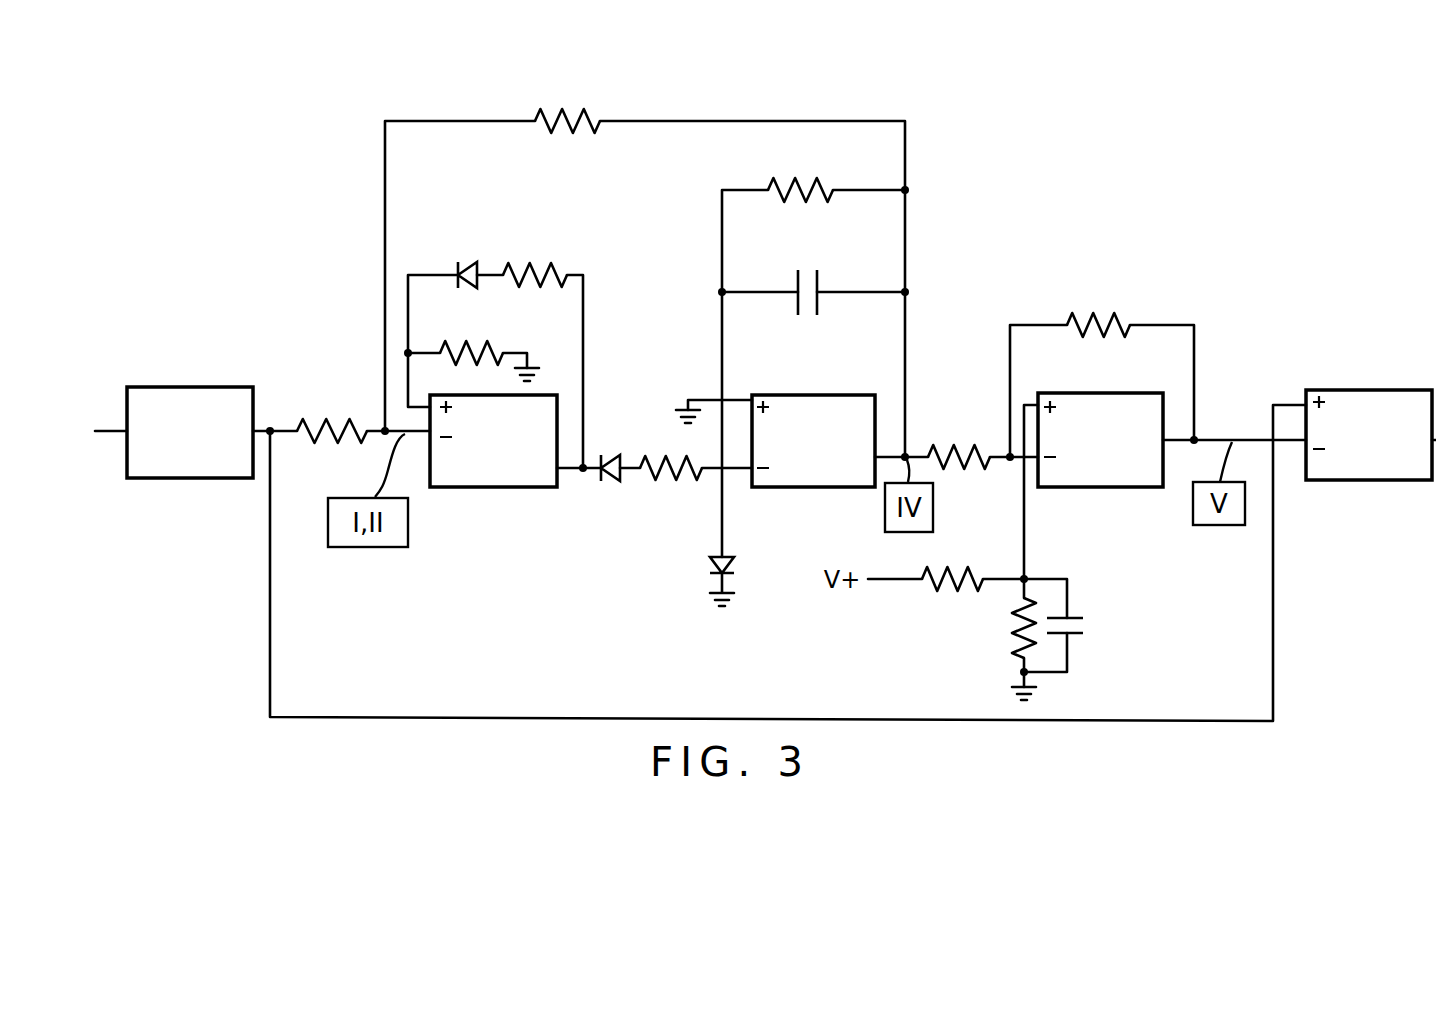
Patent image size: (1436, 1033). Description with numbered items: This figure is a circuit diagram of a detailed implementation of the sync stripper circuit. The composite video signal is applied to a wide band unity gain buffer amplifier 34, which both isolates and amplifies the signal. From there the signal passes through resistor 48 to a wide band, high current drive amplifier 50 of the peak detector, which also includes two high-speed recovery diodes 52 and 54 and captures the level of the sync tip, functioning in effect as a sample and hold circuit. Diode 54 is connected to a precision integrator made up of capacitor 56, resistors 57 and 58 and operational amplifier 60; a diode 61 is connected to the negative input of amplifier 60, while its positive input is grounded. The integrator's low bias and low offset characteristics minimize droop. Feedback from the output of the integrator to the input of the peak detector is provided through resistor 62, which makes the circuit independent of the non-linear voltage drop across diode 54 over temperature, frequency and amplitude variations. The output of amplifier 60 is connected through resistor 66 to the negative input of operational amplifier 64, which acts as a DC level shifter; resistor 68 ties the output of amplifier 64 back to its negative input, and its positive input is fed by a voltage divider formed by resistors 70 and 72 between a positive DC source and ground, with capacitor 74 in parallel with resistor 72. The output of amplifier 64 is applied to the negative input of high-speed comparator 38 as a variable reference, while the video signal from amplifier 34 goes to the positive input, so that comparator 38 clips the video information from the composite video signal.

The buffer amplifier 34 is at (205, 480).
The high-speed comparator 38 is at (1372, 483).
The resistor 48 is at (310, 441).
The high current drive amplifier 50 is at (513, 490).
The high-speed recovery diode 52 is at (468, 273).
The high-speed recovery diode 54 is at (607, 485).
The capacitor 56 is at (818, 303).
The resistor 57 is at (800, 199).
The resistor 58 is at (674, 478).
The operational amplifier 60 is at (836, 491).
The diode 61 is at (736, 567).
The resistor 62 is at (575, 110).
The operational amplifier 64 is at (1108, 490).
The resistor 66 is at (948, 440).
The resistor 68 is at (1082, 310).
The resistor 70 is at (932, 597).
The resistor 72 is at (1010, 622).
The capacitor 74 is at (1078, 622).